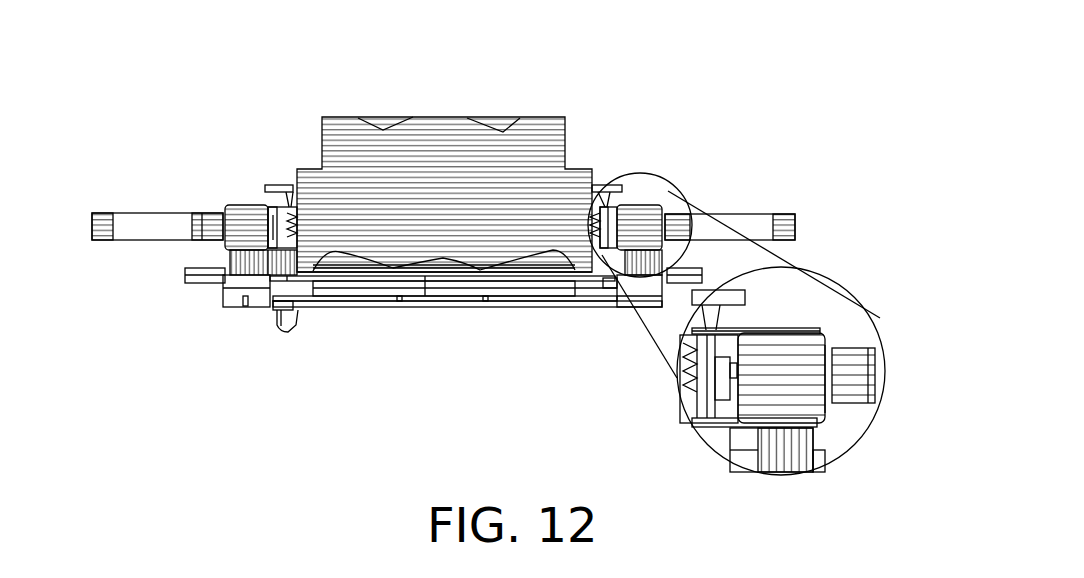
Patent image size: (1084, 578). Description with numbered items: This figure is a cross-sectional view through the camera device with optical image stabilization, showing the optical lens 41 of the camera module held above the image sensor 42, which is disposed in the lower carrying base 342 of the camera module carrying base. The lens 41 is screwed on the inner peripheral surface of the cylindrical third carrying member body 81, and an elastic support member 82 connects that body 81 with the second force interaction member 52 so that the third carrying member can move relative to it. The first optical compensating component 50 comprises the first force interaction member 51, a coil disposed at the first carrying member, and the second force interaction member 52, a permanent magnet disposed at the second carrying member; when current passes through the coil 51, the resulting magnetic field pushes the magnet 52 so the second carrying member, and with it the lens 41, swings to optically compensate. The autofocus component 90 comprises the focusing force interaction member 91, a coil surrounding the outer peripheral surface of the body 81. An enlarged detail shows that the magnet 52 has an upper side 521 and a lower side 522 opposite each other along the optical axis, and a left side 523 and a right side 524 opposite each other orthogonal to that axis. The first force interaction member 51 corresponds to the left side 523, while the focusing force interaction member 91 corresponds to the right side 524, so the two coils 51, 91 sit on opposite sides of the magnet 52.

The optical lens 41 is at (538, 145).
The image sensor 42 is at (455, 283).
The lower carrying base 342 is at (613, 290).
The first optical compensating component 50 is at (92, 90).
The first force interaction member 51 is at (210, 218).
The second force interaction member 52 is at (248, 215).
The third carrying member body 81 is at (287, 235).
The elastic support member 82 is at (262, 253).
The autofocus component 90 is at (429, 223).
The focusing force interaction member 91 is at (290, 210).
The upper side 521 is at (783, 336).
The lower side 522 is at (785, 422).
The left side 523 is at (825, 395).
The right side 524 is at (733, 352).